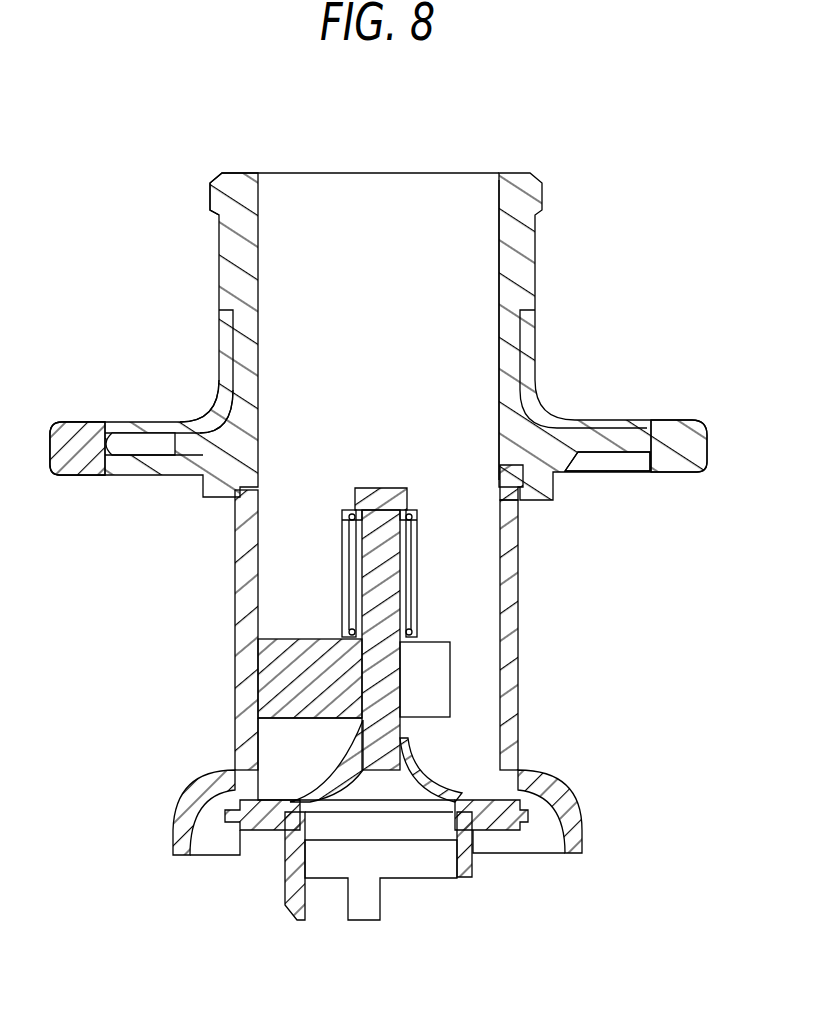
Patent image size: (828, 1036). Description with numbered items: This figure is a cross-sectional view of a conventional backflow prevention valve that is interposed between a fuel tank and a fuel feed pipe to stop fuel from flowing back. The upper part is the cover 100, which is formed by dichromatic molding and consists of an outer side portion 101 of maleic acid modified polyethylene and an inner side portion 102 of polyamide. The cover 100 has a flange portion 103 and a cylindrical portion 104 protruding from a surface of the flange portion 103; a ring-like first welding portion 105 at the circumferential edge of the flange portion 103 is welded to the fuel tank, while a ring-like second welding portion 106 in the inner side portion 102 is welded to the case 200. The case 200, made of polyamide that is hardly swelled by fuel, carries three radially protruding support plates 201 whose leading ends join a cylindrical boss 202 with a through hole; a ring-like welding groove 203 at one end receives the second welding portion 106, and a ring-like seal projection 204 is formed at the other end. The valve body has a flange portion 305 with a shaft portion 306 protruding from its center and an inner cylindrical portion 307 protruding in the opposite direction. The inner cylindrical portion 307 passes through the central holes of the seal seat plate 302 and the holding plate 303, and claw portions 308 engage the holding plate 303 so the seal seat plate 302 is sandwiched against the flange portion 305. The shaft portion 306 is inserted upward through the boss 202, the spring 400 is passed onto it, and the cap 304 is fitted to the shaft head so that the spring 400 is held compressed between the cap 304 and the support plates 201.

The cover 100 is at (532, 250).
The outer side portion 101 is at (656, 424).
The inner side portion 102 is at (498, 236).
The flange portion 103 is at (122, 432).
The cylindrical portion 104 is at (237, 178).
The first welding portion 105 is at (658, 474).
The second welding portion 106 is at (512, 475).
The case 200 is at (238, 604).
The support plate 201 is at (300, 650).
The boss 202 is at (404, 648).
The welding groove 203 is at (208, 435).
The seal projection 204 is at (547, 790).
The seal seat plate 302 is at (222, 797).
The holding plate 303 is at (238, 845).
The cap 304 is at (368, 488).
The flange portion 305 is at (340, 788).
The shaft portion 306 is at (402, 580).
The inner cylindrical portion 307 is at (448, 843).
The claw portion 308 is at (298, 910).
The spring 400 is at (346, 556).